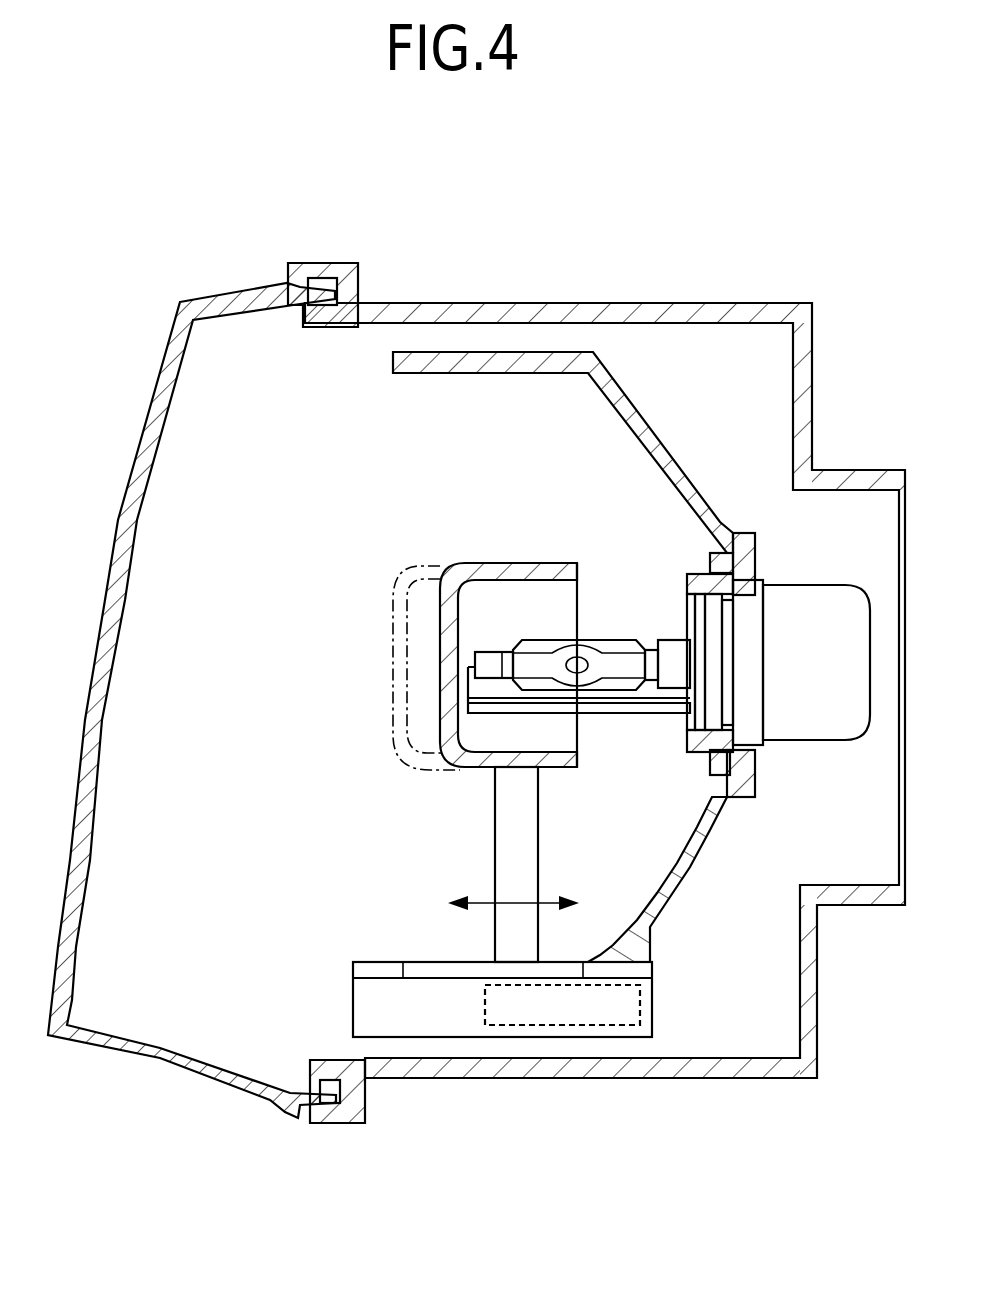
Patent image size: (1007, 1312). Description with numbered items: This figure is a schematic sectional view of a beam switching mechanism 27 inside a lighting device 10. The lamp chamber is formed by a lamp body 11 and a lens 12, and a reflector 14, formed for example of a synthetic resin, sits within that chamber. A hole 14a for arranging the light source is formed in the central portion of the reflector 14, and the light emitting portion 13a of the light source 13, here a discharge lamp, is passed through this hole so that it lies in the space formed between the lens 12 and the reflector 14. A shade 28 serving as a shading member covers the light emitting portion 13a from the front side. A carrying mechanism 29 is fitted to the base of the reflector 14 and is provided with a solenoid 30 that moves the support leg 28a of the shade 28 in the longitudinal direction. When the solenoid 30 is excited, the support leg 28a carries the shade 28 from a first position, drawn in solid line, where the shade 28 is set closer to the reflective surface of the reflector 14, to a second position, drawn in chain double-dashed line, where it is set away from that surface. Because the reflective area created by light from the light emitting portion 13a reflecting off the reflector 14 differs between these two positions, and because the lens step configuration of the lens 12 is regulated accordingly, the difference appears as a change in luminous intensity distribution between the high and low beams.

The lighting device 10 is at (155, 238).
The lamp body 11 is at (487, 303).
The lens 12 is at (137, 480).
The light source 13 is at (764, 750).
The light emitting portion 13a is at (620, 640).
The reflector 14 is at (662, 436).
The hole 14a is at (757, 582).
The beam switching mechanism 27 is at (387, 524).
The shade 28 is at (515, 563).
The support leg 28a is at (538, 830).
The carrying mechanism 29 is at (655, 1005).
The solenoid 30 is at (560, 1043).